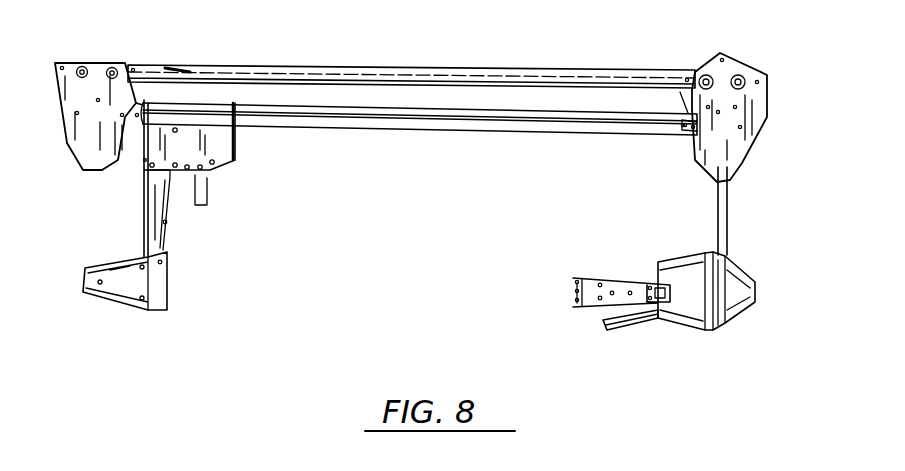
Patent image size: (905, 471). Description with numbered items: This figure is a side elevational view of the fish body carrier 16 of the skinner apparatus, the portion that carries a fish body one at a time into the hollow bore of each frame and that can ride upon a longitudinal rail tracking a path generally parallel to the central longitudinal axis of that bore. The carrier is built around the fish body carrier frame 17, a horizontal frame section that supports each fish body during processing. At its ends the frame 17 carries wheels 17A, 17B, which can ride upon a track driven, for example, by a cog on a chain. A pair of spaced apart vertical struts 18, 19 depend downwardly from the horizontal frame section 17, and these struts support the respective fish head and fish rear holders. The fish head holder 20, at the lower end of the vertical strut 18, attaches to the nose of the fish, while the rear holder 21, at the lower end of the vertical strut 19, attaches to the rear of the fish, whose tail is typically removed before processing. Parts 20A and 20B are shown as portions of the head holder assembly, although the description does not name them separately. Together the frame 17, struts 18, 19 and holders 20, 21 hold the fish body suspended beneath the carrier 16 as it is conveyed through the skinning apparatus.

The fish body carrier 16 is at (412, 70).
The fish body carrier frame 17 is at (200, 62).
The wheel 17A is at (90, 63).
The wheel 17B is at (703, 75).
The vertical strut 18 is at (727, 218).
The vertical strut 19 is at (150, 232).
The fish head holder 20 is at (745, 315).
The clamp arm 20A is at (575, 307).
The clamp bar 20B is at (623, 328).
The fish rear holder 21 is at (120, 300).